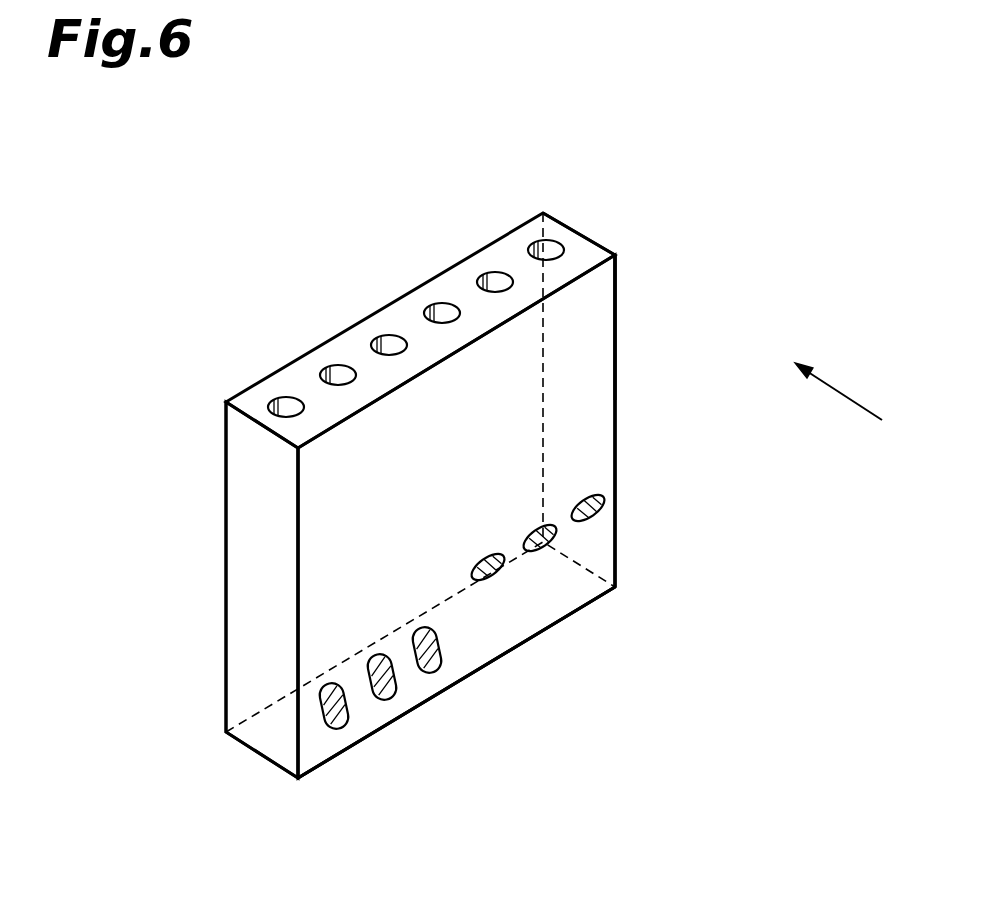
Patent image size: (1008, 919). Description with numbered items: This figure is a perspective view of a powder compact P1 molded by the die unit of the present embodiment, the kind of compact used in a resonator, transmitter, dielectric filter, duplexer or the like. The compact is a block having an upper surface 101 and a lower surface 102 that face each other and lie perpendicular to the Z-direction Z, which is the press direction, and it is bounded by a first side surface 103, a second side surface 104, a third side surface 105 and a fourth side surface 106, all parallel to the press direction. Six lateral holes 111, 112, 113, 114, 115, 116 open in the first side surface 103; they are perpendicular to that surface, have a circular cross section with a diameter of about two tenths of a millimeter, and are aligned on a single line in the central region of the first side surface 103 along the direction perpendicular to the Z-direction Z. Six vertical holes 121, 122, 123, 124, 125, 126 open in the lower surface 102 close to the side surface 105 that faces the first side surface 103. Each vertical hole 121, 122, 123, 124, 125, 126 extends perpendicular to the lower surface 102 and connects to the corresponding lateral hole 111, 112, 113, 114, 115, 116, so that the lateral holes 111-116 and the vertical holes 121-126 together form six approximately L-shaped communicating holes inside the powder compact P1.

The upper surface 101 is at (323, 472).
The lower surface 102 is at (518, 605).
The first side surface 103 is at (593, 252).
The second side surface 104 is at (253, 570).
The third side surface 105 is at (463, 650).
The fourth side surface 106 is at (580, 413).
The plane P1 is at (617, 330).
The lateral hole 111 is at (272, 400).
The lateral hole 112 is at (320, 368).
The lateral hole 113 is at (378, 338).
The lateral hole 114 is at (433, 303).
The lateral hole 115 is at (480, 272).
The lateral hole 116 is at (550, 240).
The vertical hole 121 is at (353, 703).
The vertical hole 122 is at (385, 657).
The vertical hole 123 is at (430, 632).
The vertical hole 124 is at (483, 558).
The vertical hole 125 is at (525, 530).
The vertical hole 126 is at (582, 493).
The Z-direction Z is at (824, 380).